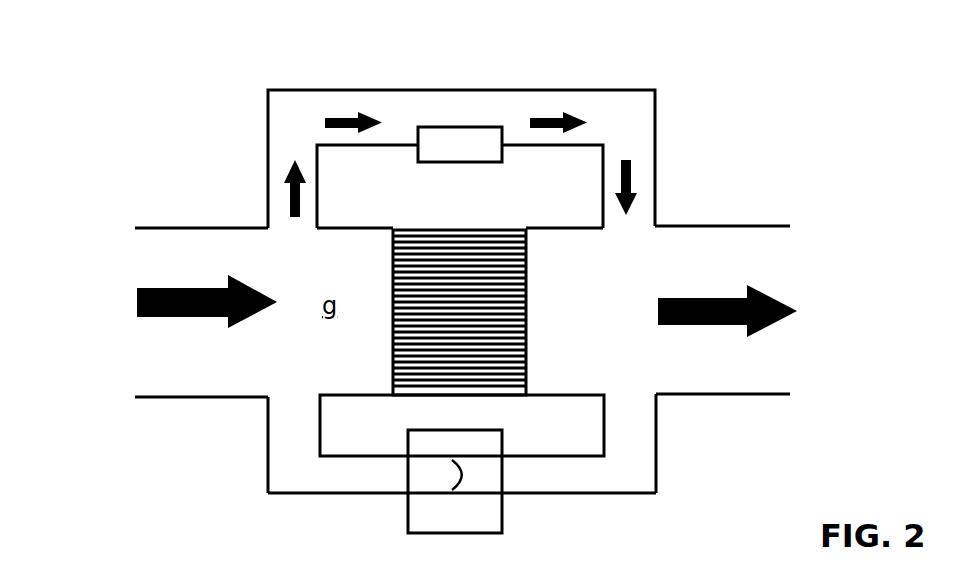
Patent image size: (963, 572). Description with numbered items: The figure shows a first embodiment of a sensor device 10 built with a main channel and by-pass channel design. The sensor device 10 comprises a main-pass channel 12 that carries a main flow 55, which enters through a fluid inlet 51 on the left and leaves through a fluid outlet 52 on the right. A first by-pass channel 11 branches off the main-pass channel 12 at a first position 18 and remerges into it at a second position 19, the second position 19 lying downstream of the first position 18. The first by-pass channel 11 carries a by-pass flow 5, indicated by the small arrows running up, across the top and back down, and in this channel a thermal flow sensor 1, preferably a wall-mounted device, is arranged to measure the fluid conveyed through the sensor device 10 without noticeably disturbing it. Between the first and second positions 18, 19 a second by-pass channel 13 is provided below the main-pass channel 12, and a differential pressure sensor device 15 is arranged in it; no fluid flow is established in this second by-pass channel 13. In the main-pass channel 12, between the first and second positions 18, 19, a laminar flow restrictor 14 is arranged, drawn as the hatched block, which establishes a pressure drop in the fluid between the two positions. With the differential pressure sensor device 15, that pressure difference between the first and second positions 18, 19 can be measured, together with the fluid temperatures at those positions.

The thermal flow sensor 1 is at (460, 142).
The by-pass flow 5 is at (337, 119).
The sensor device 10 is at (678, 89).
The first by-pass channel 11 is at (637, 147).
The main-pass channel 12 is at (685, 347).
The second by-pass channel 13 is at (565, 475).
The laminar flow restrictor 14 is at (508, 320).
The differential pressure sensor device 15 is at (427, 517).
The first position 18 is at (292, 357).
The second position 19 is at (630, 357).
The fluid inlet 51 is at (185, 367).
The fluid outlet 52 is at (755, 362).
The main flow 55 is at (165, 287).